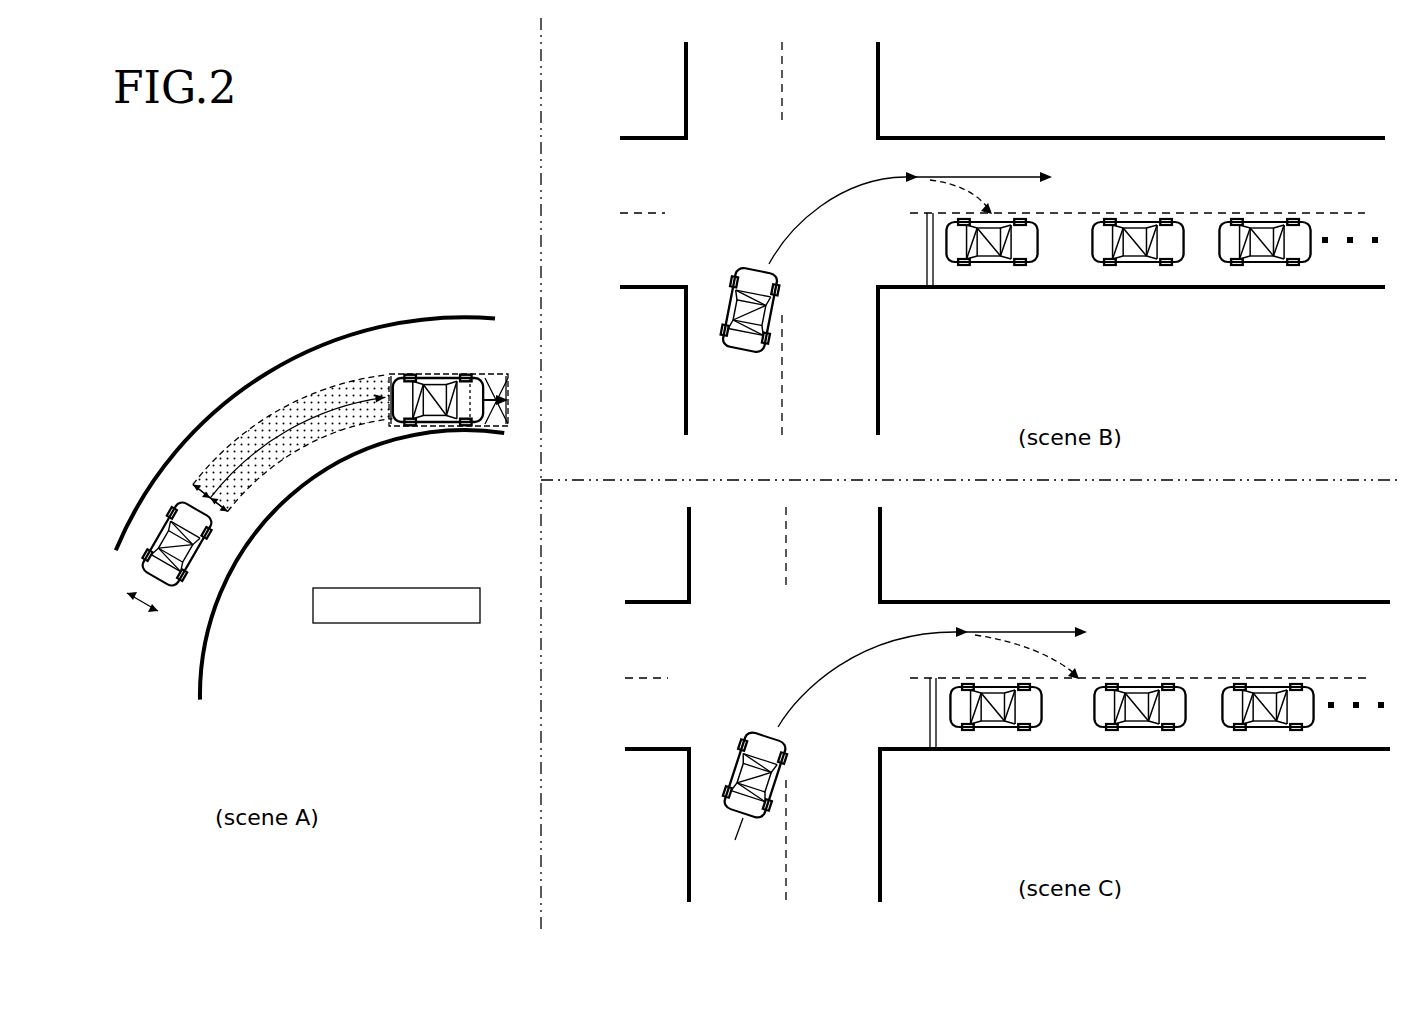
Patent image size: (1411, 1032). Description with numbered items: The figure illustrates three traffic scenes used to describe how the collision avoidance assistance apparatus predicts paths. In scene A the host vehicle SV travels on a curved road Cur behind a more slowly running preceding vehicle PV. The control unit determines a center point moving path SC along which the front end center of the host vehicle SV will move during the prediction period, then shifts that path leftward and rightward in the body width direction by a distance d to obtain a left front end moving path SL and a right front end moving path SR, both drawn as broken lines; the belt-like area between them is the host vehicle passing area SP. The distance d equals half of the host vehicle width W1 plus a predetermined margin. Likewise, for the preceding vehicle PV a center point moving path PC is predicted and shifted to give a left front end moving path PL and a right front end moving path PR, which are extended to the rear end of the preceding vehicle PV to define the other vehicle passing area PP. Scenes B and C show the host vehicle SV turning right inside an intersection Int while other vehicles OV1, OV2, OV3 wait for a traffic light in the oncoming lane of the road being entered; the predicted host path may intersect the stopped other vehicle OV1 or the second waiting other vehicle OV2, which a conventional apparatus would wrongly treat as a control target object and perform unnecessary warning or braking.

The left front end moving path PL is at (445, 380).
The center point moving path PC is at (473, 380).
The right front end moving path PR is at (447, 426).
The other vehicle passing area PP is at (493, 427).
The preceding vehicle PV is at (424, 421).
The curved road Cur is at (343, 460).
The host vehicle passing area SP is at (310, 408).
The center point moving path SC is at (283, 433).
The left front end moving path SL is at (222, 452).
The right front end moving path SR is at (265, 473).
The host vehicle SV is at (197, 557).
The width of the host vehicle W1 is at (131, 610).
The distance d is at (336, 544).
The intersection Int is at (720, 170).
The other vehicle OV1 is at (997, 263).
The other vehicle OV2 is at (1133, 263).
The other vehicle OV3 is at (1262, 263).